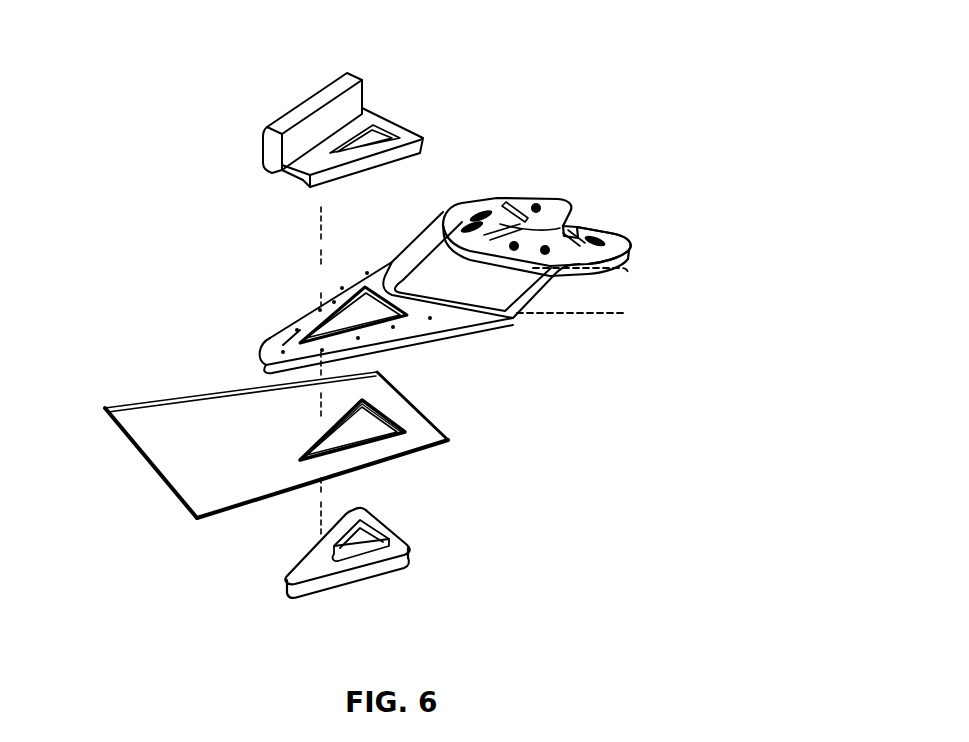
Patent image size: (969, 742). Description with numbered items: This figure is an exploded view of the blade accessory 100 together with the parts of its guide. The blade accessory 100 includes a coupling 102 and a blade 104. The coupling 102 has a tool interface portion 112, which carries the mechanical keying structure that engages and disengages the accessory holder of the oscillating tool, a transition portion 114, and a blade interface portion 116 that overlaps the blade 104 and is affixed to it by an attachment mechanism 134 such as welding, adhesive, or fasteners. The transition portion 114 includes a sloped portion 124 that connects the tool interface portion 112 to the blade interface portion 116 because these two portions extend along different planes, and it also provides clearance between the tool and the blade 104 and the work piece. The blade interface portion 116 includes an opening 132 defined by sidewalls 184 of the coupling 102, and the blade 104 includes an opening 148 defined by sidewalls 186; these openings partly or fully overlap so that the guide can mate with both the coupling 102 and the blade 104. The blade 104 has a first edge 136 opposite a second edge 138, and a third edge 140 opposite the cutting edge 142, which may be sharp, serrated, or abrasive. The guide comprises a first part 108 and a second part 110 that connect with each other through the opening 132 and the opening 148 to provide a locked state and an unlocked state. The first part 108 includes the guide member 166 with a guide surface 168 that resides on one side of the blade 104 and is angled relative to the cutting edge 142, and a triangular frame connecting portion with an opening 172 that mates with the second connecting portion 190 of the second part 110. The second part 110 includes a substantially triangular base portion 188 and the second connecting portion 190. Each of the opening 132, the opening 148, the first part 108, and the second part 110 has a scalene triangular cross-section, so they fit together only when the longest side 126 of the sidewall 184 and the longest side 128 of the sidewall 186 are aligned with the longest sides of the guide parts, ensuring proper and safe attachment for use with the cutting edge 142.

The blade accessory 100 is at (774, 100).
The coupling 102 is at (693, 150).
The blade 104 is at (558, 357).
The first part 108 is at (453, 65).
The second part 110 is at (498, 508).
The tool interface portion 112 is at (598, 197).
The transition portion 114 is at (514, 220).
The blade interface portion 116 is at (261, 264).
The sloped portion 124 is at (625, 270).
The longest side 126 is at (357, 298).
The longest side 128 is at (295, 460).
The opening 132 is at (378, 317).
The attachment mechanism 134 is at (281, 351).
The first edge 136 is at (205, 393).
The second edge 138 is at (258, 503).
The third edge 140 is at (361, 444).
The cutting edge 142 is at (146, 461).
The opening 148 is at (367, 427).
The guide member 166 is at (316, 115).
The guide surface 168 is at (263, 148).
The opening 172 is at (373, 127).
The sidewalls 184 is at (348, 333).
The sidewalls 186 is at (367, 443).
The base portion 188 is at (384, 553).
The second connecting portion 190 is at (400, 531).